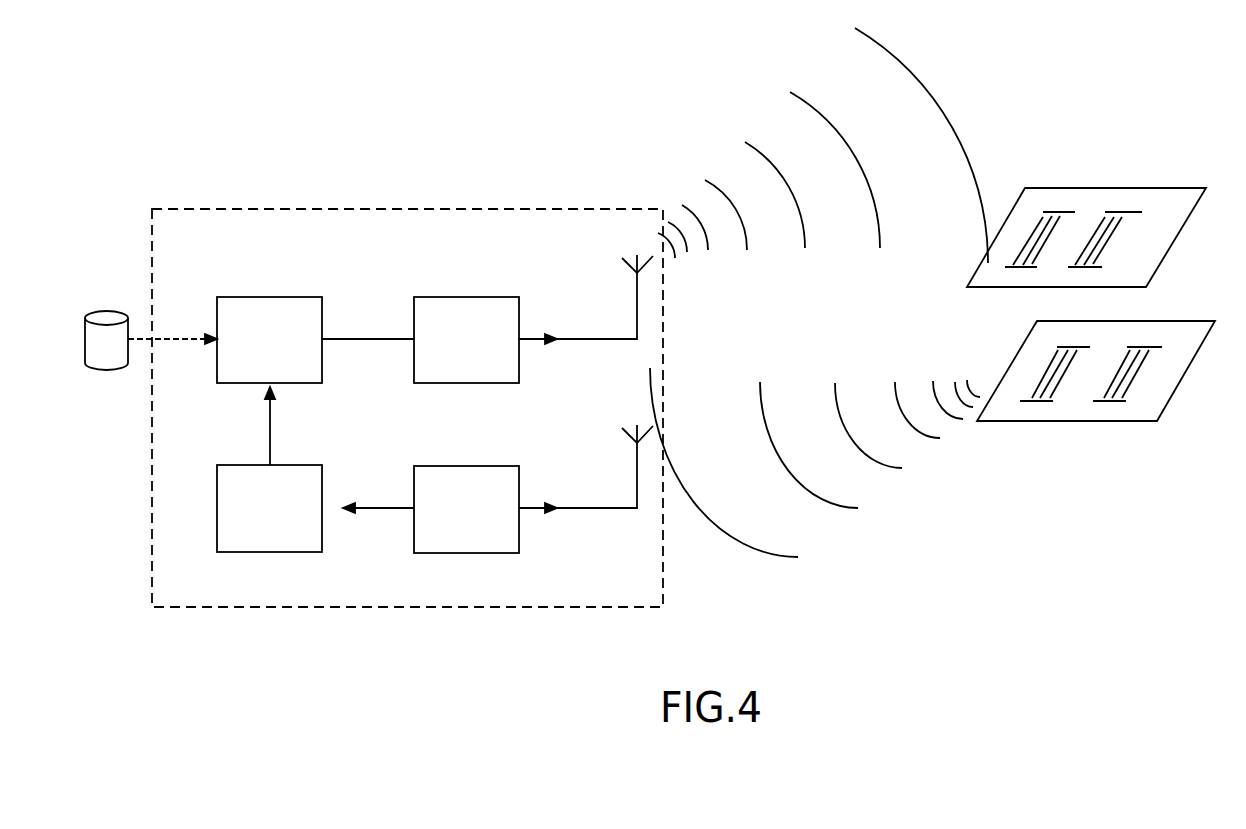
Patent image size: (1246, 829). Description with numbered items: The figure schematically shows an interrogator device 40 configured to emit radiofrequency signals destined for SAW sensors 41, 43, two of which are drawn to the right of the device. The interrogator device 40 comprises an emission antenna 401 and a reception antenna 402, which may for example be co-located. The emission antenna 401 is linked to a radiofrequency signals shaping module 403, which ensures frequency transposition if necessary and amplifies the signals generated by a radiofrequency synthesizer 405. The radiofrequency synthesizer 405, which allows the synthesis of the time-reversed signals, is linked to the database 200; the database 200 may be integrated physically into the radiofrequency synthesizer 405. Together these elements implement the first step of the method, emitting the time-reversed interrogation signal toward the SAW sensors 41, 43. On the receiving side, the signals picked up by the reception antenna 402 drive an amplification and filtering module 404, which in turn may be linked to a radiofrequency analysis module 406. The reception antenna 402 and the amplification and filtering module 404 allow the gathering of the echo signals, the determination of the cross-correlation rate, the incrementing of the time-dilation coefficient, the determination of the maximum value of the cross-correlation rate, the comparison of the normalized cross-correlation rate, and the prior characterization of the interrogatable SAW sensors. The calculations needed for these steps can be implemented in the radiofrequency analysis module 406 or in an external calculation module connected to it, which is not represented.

The interrogator device 40 is at (211, 595).
The SAW sensor 41 is at (1093, 187).
The SAW sensor 43 is at (1178, 320).
The database 200 is at (101, 366).
The emission antenna 401 is at (622, 259).
The reception antenna 402 is at (622, 429).
The radiofrequency signals shaping module 403 is at (463, 297).
The amplification and filtering module 404 is at (457, 466).
The radiofrequency synthesizer 405 is at (262, 297).
The radiofrequency analysis module 406 is at (297, 465).